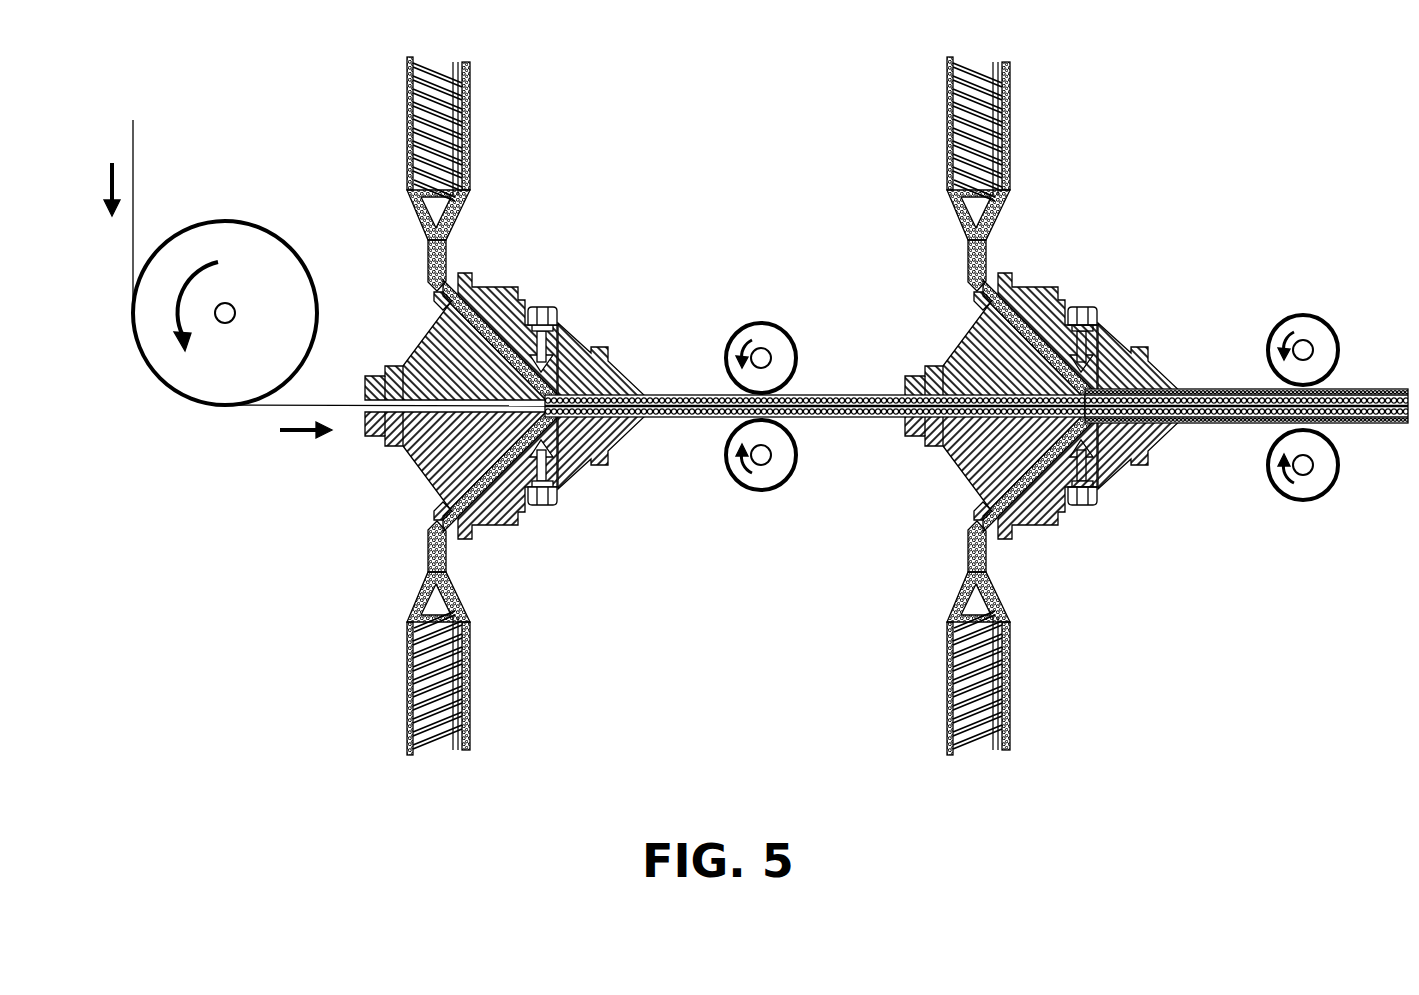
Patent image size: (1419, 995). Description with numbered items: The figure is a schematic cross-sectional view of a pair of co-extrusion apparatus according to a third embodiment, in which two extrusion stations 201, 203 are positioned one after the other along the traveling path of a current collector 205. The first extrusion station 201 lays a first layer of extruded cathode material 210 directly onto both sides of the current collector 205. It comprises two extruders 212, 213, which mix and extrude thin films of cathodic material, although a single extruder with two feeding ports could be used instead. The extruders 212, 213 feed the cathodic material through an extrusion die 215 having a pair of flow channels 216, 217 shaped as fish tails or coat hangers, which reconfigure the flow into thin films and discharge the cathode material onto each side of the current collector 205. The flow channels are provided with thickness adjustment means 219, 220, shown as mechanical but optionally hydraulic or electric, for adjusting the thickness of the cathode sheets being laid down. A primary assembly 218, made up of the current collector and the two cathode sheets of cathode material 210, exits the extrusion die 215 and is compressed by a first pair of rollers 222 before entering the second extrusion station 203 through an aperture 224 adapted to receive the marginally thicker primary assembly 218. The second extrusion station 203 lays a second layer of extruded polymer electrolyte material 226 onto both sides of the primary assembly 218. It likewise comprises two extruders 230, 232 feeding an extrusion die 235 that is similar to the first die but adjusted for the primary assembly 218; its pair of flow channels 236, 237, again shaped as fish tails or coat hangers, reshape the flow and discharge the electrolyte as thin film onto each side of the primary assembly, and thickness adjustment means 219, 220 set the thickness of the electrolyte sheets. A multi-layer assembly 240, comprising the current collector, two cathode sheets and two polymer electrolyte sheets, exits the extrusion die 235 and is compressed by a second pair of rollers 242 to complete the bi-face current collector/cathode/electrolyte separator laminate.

The extrusion station 201 is at (539, 406).
The extrusion station 203 is at (1066, 406).
The current collector 205 is at (133, 162).
The extruded cathode material 210 is at (700, 395).
The extruder 212 is at (472, 703).
The extruder 213 is at (472, 110).
The extrusion die 215 is at (630, 372).
The flow channel 216 is at (508, 472).
The flow channel 217 is at (508, 340).
The primary assembly 218 is at (678, 418).
The thickness adjustment means 219 is at (548, 368).
The thickness adjustment means 220 is at (562, 455).
The first pair of rollers 222 is at (780, 330).
The aperture 224 is at (870, 412).
The extruded polymer electrolyte material 226 is at (1240, 390).
The extruder 230 is at (1012, 703).
The extruder 232 is at (1012, 110).
The extrusion die 235 is at (1170, 372).
The flow channel 236 is at (1048, 472).
The flow channel 237 is at (1048, 340).
The multi-layer assembly 240 is at (1220, 410).
The second pair of rollers 242 is at (1322, 320).